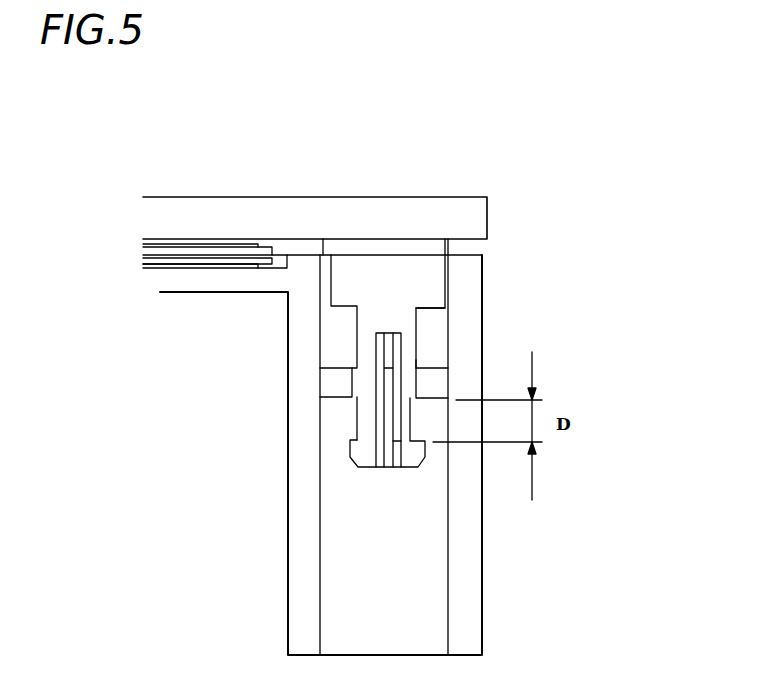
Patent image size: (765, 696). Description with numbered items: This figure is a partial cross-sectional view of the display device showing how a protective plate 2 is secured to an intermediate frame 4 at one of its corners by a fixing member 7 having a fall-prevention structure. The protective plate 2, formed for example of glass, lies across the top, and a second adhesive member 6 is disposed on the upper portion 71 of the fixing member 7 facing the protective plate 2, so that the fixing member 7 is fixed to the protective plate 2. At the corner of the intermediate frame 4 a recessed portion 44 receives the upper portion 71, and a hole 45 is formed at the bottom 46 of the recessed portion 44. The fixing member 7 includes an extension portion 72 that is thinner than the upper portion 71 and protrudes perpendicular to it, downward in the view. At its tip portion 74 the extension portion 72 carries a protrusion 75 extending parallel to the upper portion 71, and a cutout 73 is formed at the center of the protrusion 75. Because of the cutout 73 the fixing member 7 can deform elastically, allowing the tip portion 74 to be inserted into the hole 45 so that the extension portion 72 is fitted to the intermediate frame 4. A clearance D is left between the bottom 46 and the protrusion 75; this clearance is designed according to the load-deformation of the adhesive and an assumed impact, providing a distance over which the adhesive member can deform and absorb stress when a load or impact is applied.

The protective plate 2 is at (193, 212).
The second adhesive member 6 is at (353, 247).
The intermediate frame 4 is at (297, 453).
The fixing member 7 is at (433, 268).
The upper portion 71 is at (383, 252).
The extension portion 72 is at (367, 385).
The cutout 73 is at (385, 453).
The tip portion 74 is at (403, 468).
The protrusion 75 is at (412, 455).
The recessed portion 44 is at (435, 325).
The hole 45 is at (426, 363).
The bottom 46 is at (342, 377).